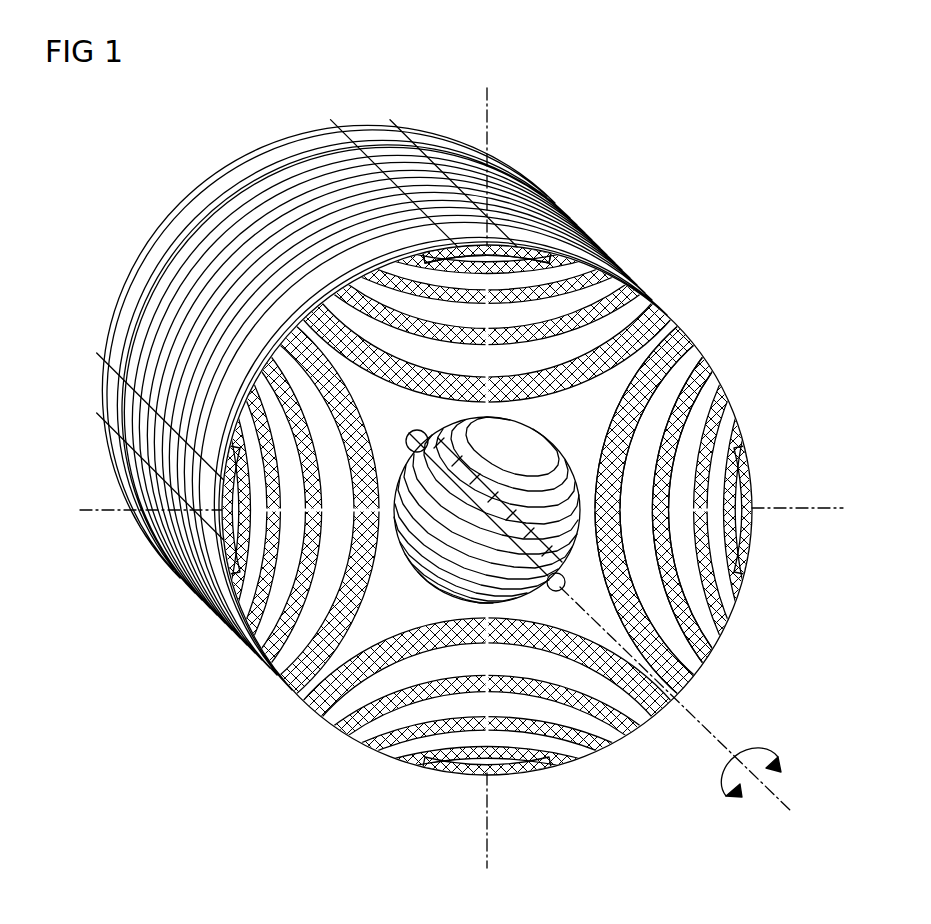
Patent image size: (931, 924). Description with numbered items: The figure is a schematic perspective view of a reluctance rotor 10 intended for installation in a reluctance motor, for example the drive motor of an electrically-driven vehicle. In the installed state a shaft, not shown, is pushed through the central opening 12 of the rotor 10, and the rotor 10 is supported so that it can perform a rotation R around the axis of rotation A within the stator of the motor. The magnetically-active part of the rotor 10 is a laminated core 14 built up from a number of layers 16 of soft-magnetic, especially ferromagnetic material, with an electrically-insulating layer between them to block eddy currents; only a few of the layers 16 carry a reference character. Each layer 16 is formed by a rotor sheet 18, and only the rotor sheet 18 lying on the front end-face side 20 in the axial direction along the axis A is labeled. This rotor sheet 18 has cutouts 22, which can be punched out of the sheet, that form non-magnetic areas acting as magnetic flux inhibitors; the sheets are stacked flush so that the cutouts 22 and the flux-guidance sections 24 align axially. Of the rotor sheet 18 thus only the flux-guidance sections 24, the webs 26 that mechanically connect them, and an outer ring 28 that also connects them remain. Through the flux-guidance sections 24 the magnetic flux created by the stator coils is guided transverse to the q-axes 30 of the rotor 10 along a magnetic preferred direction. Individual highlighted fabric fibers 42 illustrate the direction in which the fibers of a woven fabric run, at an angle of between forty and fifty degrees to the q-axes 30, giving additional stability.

The rotor 10 is at (660, 107).
The opening 12 is at (465, 580).
The laminated core 14 is at (185, 181).
The layers 16 is at (285, 152).
The rotor sheet 18 is at (710, 388).
The end-face side 20 is at (582, 410).
The cutouts 22 is at (530, 733).
The flux-guidance sections 24 is at (305, 697).
The webs 26 is at (700, 529).
The outer ring 28 is at (527, 245).
The q-axes 30 is at (489, 96).
The fabric fibers 42 is at (637, 312).
The axis of rotation A is at (797, 813).
The rotation R is at (777, 748).